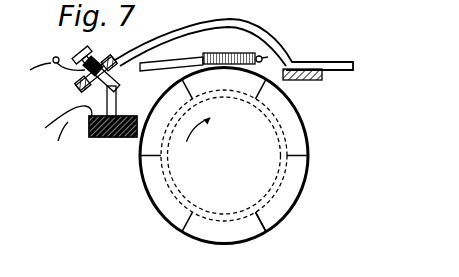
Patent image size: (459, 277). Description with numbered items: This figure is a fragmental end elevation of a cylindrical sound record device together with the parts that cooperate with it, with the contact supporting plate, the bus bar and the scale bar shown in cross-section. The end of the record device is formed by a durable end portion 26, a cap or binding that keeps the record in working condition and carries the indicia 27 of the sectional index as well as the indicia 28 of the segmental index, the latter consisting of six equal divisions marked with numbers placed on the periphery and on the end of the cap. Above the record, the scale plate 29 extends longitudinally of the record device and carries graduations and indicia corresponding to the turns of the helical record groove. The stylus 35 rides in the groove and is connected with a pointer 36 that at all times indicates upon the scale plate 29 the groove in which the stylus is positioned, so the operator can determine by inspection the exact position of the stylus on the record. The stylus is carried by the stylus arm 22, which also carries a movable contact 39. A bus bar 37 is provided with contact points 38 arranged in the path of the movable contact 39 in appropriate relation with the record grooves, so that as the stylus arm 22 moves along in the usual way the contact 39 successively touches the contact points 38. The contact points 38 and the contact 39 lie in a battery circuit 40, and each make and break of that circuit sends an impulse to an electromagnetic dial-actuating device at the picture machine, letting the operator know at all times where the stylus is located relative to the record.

The stylus arm 22 is at (252, 31).
The durable end portion 26 is at (155, 196).
The indicia of the sectional indexes 27 is at (233, 165).
The indicia of the segmental indexes 28 is at (273, 215).
The scale plate 29 is at (315, 80).
The stylus 35 is at (200, 71).
The pointer 36 is at (343, 62).
The bus bar 37 is at (52, 123).
The contact points 38 is at (118, 100).
The movable contact 39 is at (108, 93).
The battery circuit 40 is at (44, 71).